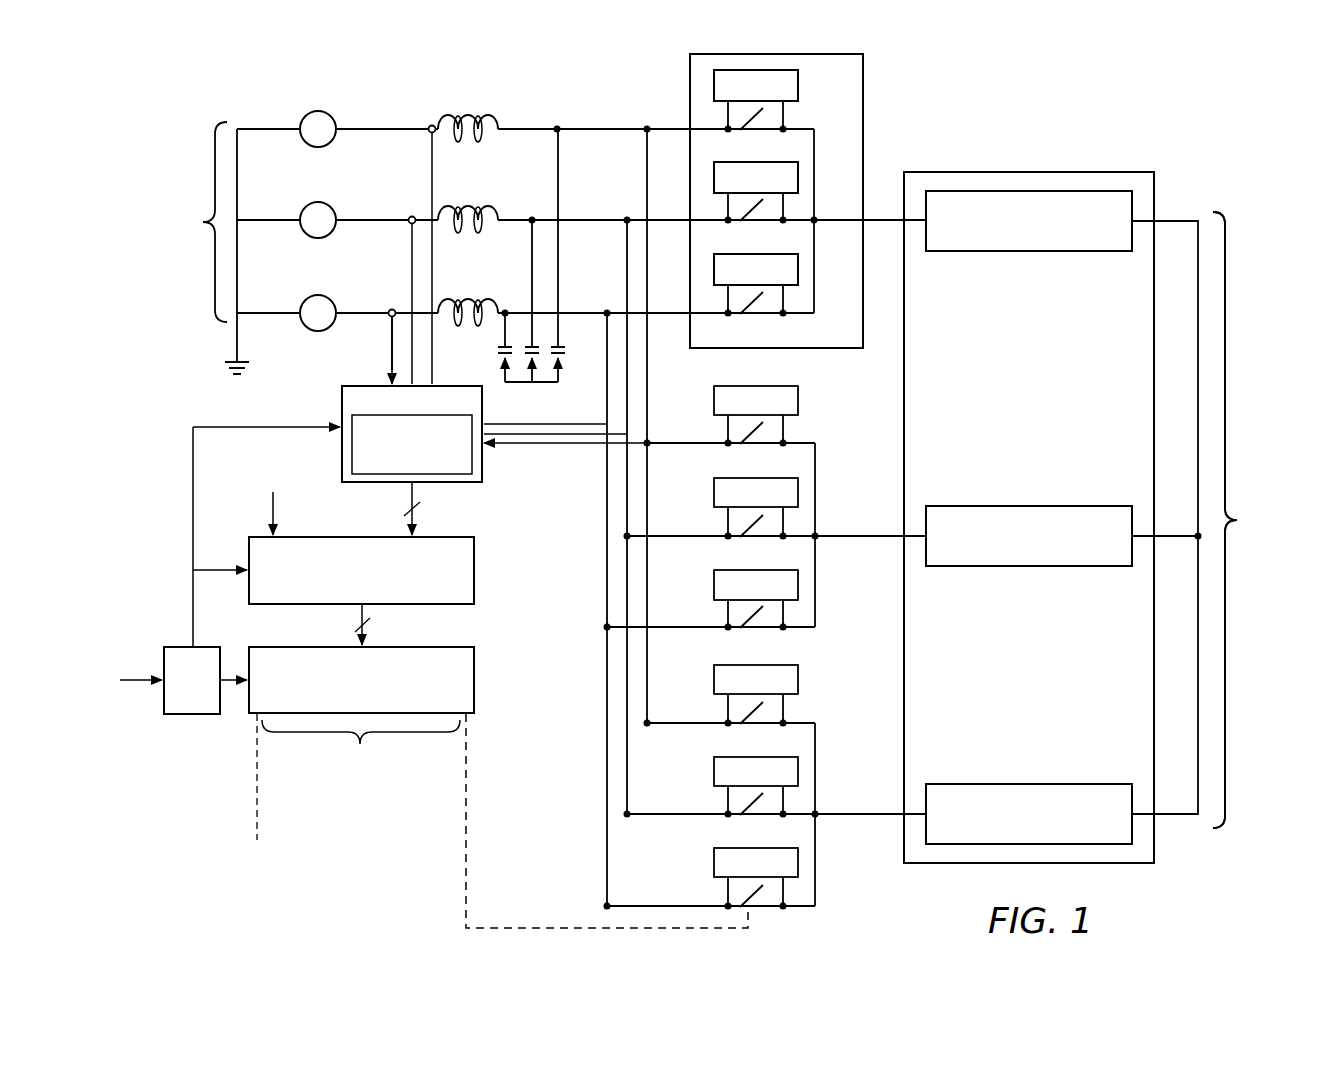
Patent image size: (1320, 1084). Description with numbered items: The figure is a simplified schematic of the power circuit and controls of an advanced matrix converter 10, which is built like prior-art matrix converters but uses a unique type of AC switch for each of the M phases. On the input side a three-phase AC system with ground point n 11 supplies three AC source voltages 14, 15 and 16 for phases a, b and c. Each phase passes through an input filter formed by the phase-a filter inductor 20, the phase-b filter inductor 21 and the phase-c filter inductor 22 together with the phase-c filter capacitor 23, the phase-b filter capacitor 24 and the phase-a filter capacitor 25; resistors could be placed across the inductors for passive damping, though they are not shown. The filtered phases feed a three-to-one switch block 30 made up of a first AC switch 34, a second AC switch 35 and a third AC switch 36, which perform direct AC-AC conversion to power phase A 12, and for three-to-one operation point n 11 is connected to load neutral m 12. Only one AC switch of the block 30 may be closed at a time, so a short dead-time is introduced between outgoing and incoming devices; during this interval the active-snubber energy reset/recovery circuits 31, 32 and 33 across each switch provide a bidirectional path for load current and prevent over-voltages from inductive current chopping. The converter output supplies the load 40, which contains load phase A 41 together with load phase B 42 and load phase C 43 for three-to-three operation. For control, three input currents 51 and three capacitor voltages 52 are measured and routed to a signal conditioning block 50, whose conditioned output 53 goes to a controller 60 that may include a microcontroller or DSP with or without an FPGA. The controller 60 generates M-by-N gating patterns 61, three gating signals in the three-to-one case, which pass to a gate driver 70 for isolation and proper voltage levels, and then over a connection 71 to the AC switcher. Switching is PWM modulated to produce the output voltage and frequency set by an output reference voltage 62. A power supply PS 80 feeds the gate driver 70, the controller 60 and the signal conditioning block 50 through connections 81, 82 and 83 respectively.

The matrix converter 10 is at (1212, 146).
The point n 11 is at (184, 223).
The phase A / load neutral m 12 is at (1264, 520).
The AC voltage Van,s 14 is at (302, 120).
The AC voltage Vbn,s 15 is at (302, 212).
The AC voltage Vcn,s 16 is at (302, 305).
The filter inductor La 20 is at (482, 102).
The filter inductor Lb 21 is at (482, 195).
The filter inductor Lc 22 is at (480, 287).
The filter capacitor Cc 23 is at (500, 347).
The filter capacitor Cb 24 is at (528, 328).
The filter capacitor Ca 25 is at (555, 341).
The 3-1 switch block 30 is at (874, 113).
The active-snubber energy reset/recovery circuit 31 is at (756, 99).
The active-snubber energy reset/recovery circuit 32 is at (756, 191).
The active-snubber energy reset/recovery circuit 33 is at (756, 283).
The AC switch S1 34 is at (786, 128).
The AC switch S2 35 is at (786, 218).
The AC switch S3 36 is at (786, 313).
The load 40 is at (1098, 172).
The load phase A 41 is at (1030, 252).
The load phase B 42 is at (1028, 506).
The load phase C 43 is at (1028, 784).
The signal conditioning block 50 is at (466, 482).
The input current i 51 is at (388, 362).
The capacitor voltage v 52 is at (560, 446).
The conditioned signal output 53 is at (398, 510).
The controller 60 is at (474, 565).
The M×N gating patterns 61 is at (352, 634).
The output reference voltage 62 is at (273, 513).
The gate driver 70 is at (474, 675).
The gating signal connection 71 is at (580, 930).
The power supply PS 80 is at (170, 636).
The power supply connection to gate driver 81 is at (226, 690).
The power supply connection to controller 82 is at (216, 576).
The power supply connection to signal conditioning 83 is at (292, 427).